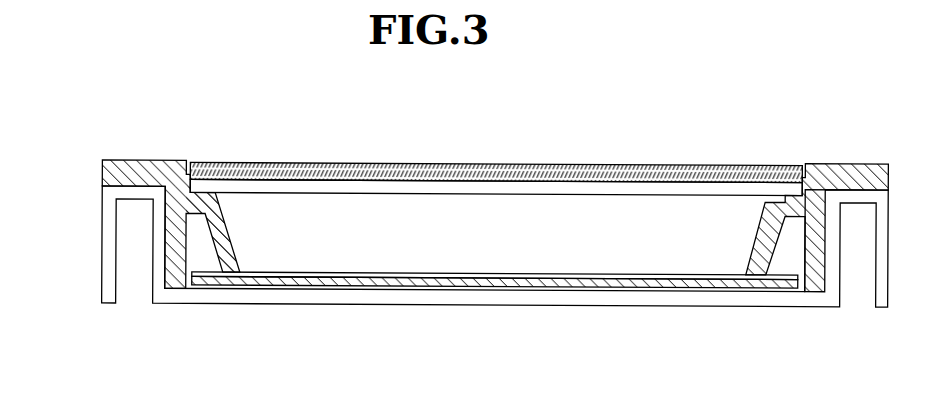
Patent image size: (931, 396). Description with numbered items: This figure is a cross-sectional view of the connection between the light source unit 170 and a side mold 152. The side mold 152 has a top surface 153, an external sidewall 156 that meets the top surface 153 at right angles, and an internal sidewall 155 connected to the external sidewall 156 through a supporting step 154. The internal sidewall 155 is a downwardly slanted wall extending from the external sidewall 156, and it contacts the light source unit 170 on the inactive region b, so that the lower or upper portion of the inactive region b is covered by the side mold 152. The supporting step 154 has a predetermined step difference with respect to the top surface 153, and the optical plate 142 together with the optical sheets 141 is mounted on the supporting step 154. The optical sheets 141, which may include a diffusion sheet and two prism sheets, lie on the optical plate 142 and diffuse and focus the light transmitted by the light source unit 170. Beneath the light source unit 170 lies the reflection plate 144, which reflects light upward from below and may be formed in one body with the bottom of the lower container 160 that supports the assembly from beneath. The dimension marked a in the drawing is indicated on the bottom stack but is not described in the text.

The optical sheets 141 is at (425, 173).
The optical plate 142 is at (548, 188).
The reflection plate 144 is at (349, 288).
The side mold 152 is at (108, 162).
The top surface 153 is at (128, 162).
The supporting step 154 is at (230, 239).
The internal sidewall 155 is at (230, 239).
The external sidewall 156 is at (170, 292).
The lower container 160 is at (102, 242).
The light source unit 170 is at (417, 278).
The gap a is at (483, 278).
The inactive region b is at (228, 275).